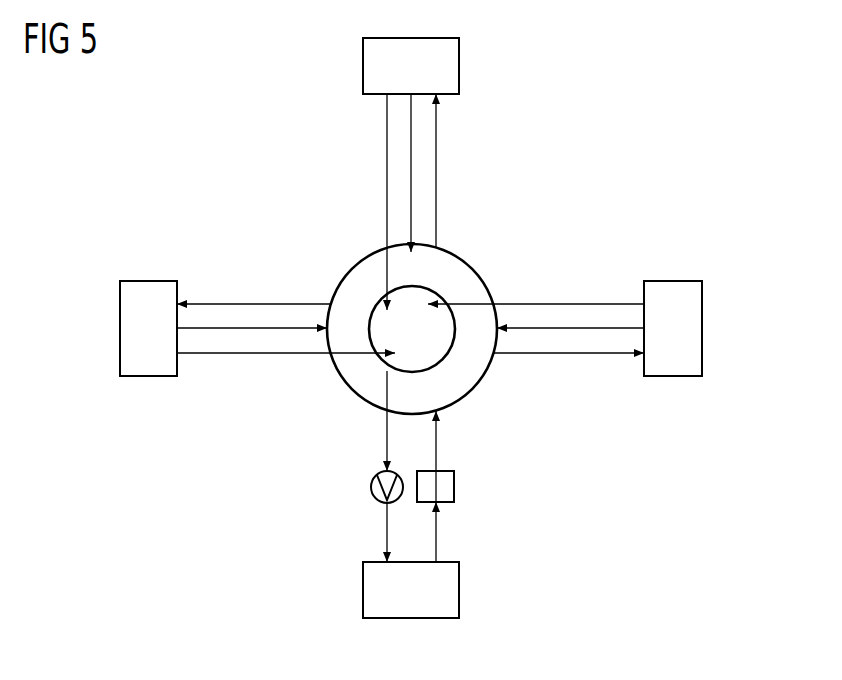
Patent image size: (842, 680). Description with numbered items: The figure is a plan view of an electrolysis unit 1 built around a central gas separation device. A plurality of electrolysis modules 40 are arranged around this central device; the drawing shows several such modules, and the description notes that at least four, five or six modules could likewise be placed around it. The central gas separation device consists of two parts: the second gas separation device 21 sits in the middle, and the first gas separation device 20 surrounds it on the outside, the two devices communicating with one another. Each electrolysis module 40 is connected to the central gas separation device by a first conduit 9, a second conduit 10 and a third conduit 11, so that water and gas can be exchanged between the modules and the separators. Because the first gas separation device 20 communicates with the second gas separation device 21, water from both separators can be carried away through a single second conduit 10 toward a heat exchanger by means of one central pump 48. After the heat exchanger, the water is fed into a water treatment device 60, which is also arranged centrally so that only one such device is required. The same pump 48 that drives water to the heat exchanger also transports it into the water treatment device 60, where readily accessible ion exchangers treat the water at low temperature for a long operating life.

The electrolysis unit 1 is at (653, 102).
The first conduit 9 is at (387, 118).
The second conduit 10 is at (411, 160).
The third conduit 11 is at (436, 121).
The first gas separation device 20 is at (430, 353).
The second gas separation device 21 is at (380, 393).
The electrolysis module 40 is at (459, 62).
The pump 48 is at (371, 487).
The water treatment device 60 is at (454, 487).